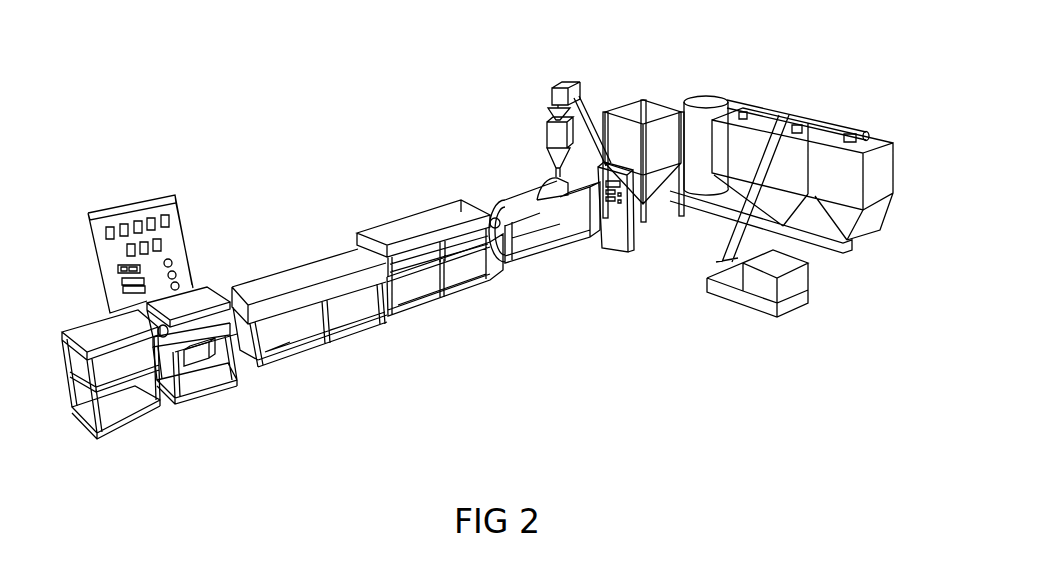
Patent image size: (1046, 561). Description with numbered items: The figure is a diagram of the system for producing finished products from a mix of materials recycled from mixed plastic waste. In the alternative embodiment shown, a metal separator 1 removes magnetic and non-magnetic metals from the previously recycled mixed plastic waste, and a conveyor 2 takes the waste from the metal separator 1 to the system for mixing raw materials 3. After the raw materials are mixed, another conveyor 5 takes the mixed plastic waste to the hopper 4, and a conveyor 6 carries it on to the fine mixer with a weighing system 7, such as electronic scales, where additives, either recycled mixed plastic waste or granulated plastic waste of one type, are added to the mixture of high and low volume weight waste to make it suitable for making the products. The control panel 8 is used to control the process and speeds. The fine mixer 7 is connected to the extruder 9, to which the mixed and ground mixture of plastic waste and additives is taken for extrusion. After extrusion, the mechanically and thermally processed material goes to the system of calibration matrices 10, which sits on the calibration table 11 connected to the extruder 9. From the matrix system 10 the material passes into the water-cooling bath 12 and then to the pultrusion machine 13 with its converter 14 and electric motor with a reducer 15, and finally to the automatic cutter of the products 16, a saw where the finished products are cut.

The metal separator 1 is at (763, 290).
The conveyor 2 is at (820, 120).
The system for mixing raw materials 3 is at (853, 170).
The hopper 4 is at (678, 120).
The conveyor 5 is at (700, 197).
The conveyor 6 is at (590, 122).
The fine mixer with a weighing system 7 is at (566, 133).
The control panel 8 is at (188, 223).
The extruder 9 is at (530, 207).
The system of calibration matrices 10 is at (402, 232).
The calibration table 11 is at (407, 297).
The water-cooling bath 12 is at (285, 297).
The pultrusion machine 13 is at (203, 298).
The converter 14 is at (190, 360).
The electric motor with a reducer 15 is at (193, 380).
The automatic cutter of the products 16 is at (110, 350).